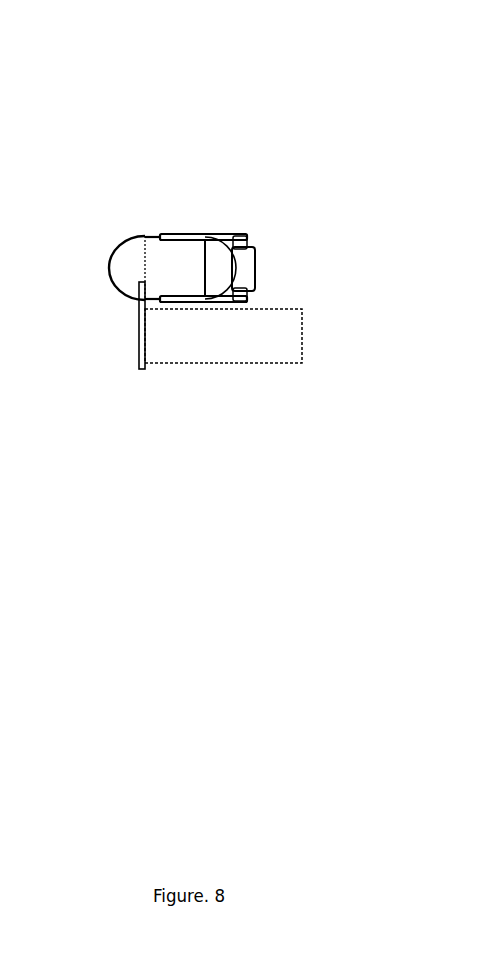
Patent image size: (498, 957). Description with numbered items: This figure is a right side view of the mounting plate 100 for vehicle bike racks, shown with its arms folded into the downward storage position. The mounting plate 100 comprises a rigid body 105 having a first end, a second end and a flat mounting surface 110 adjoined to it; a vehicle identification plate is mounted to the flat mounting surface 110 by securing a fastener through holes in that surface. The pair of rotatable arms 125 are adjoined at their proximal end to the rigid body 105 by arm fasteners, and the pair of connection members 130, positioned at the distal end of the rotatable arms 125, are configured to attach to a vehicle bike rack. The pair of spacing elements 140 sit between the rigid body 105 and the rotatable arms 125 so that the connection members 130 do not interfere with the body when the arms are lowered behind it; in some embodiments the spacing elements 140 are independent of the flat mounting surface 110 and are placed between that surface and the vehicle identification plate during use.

The mounting plate 100 is at (190, 82).
The rigid body 105 is at (131, 260).
The flat mounting surface 110 is at (139, 330).
The pair of rotatable arms 125 is at (219, 267).
The pair of connection members 130 is at (261, 258).
The pair of spacing elements 140 is at (276, 335).